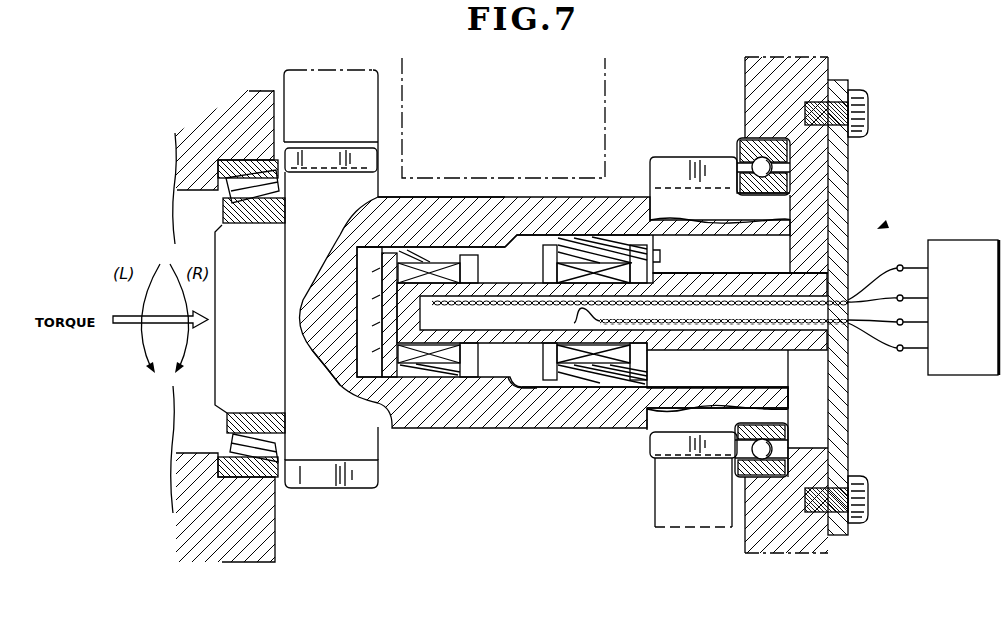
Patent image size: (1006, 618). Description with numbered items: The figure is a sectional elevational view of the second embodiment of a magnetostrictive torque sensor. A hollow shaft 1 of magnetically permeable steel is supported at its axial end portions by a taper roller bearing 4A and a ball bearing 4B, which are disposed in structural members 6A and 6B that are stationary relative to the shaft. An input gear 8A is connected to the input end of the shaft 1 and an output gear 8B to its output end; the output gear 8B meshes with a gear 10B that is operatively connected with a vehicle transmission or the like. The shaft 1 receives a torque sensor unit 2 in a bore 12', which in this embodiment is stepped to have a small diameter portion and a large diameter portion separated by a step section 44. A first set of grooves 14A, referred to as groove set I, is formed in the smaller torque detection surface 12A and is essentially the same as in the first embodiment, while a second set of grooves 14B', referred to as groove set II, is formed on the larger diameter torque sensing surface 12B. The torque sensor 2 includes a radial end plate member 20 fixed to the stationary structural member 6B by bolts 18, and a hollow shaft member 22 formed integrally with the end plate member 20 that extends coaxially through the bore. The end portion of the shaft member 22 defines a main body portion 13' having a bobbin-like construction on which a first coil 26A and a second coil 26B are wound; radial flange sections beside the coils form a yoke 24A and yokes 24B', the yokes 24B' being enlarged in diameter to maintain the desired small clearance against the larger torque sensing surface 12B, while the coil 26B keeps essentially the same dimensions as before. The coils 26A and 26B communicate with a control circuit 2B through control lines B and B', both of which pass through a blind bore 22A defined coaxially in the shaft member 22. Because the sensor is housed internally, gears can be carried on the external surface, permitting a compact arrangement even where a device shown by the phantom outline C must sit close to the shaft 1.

The structural member 6A is at (186, 147).
The taper roller bearing 4A is at (220, 194).
The input gear 8A is at (352, 480).
The hollow shaft 1 is at (440, 195).
The groove set I is at (334, 379).
The first set of grooves 14A is at (360, 306).
The yoke 24A is at (390, 254).
The main body portion 13' is at (612, 382).
The control line B is at (640, 317).
The control line B' is at (691, 321).
The first coil 26A is at (433, 364).
The second coil 26B is at (574, 364).
The second set of grooves 14B' is at (673, 259).
The groove set II is at (606, 250).
The step section 44 is at (527, 387).
The torque detection surface 12A is at (490, 250).
The torque sensing surface 12B is at (527, 240).
The bore 12' is at (707, 389).
The yoke 24B' is at (717, 369).
The hollow shaft member 22 is at (755, 282).
The blind bore 22A is at (816, 302).
The control circuit 2B is at (960, 247).
The torque sensor unit 2 is at (882, 226).
The output gear 8B is at (673, 157).
The ball bearing 4B is at (742, 140).
The structural member 6B is at (746, 73).
The end plate member 20 is at (840, 194).
The bolts 18 is at (866, 115).
The gear 10B is at (673, 502).
The phantom outline C is at (617, 93).